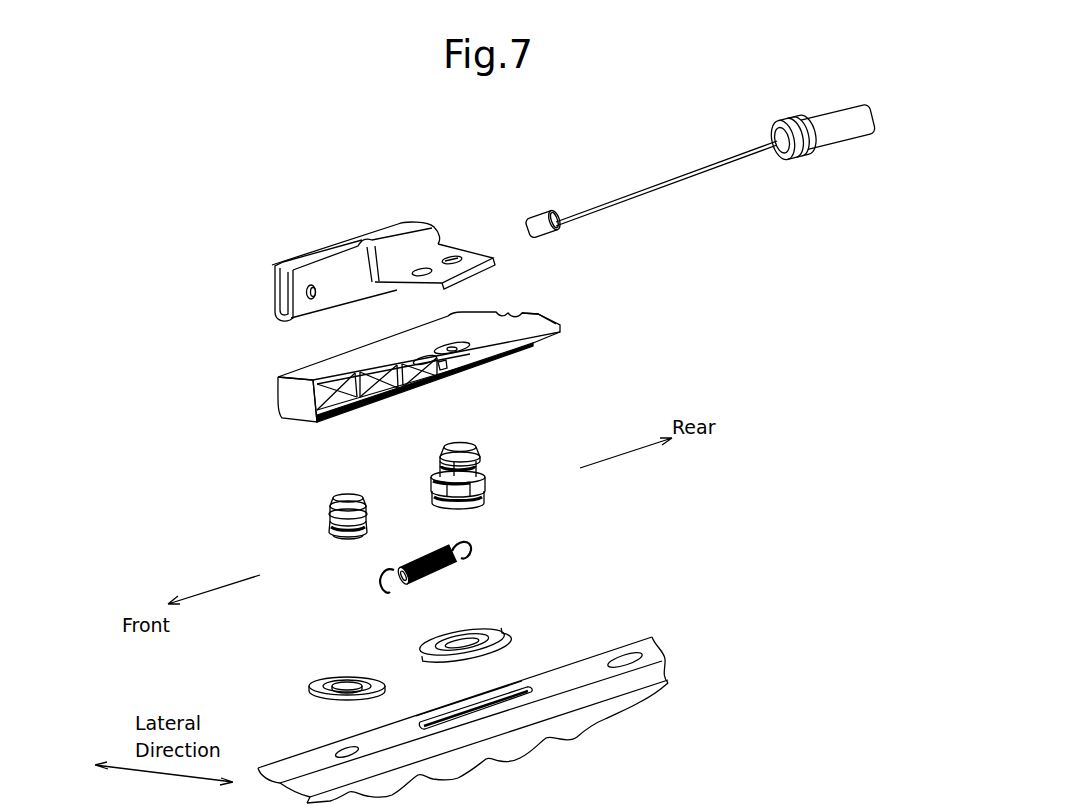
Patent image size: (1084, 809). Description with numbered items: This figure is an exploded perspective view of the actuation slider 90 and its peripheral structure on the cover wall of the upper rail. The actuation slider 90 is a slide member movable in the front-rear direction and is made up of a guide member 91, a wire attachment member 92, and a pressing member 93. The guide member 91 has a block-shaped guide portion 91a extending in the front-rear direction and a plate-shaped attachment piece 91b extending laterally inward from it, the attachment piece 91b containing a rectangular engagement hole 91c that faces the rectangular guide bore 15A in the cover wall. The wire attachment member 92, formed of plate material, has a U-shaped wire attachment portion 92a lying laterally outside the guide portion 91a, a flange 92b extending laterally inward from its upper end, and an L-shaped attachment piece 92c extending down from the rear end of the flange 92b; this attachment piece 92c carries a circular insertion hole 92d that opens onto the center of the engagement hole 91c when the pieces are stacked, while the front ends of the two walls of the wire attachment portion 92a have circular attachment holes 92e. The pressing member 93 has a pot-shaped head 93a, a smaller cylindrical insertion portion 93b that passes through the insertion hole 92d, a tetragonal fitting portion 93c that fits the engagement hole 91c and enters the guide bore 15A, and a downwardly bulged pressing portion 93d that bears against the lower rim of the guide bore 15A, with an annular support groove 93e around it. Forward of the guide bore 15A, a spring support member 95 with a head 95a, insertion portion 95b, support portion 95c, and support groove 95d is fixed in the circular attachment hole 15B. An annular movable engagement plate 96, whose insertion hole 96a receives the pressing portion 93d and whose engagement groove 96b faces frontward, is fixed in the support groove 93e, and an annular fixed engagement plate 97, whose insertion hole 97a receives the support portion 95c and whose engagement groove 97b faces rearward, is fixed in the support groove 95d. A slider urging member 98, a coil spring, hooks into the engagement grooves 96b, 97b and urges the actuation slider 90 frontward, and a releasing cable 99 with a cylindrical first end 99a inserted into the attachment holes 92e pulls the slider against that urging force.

The actuation slider 90 is at (636, 154).
The guide member 91 is at (490, 305).
The guide portion 91a is at (283, 400).
The attachment piece 91b is at (530, 328).
The engagement hole 91c is at (455, 344).
The wire attachment member 92 is at (407, 225).
The wire attachment portion 92a is at (310, 303).
The flange 92b is at (343, 265).
The attachment piece 92c is at (393, 286).
The insertion hole 92d is at (453, 261).
The attachment hole 92e is at (295, 291).
The pressing member 93 is at (463, 474).
The head 93a is at (447, 447).
The insertion portion 93b is at (445, 458).
The fitting portion 93c is at (438, 476).
The pressing portion 93d is at (440, 508).
The support groove 93e is at (484, 488).
The spring support member 95 is at (348, 513).
The head 95a is at (335, 494).
The insertion portion 95b is at (368, 505).
The support portion 95c is at (350, 540).
The support groove 95d is at (328, 525).
The movable engagement plate 96 is at (442, 632).
The insertion hole 96a is at (470, 630).
The engagement groove 96b is at (450, 650).
The fixed engagement plate 97 is at (326, 680).
The insertion hole 97a is at (340, 690).
The engagement groove 97b is at (375, 660).
The slider urging member 98 is at (452, 568).
The releasing cable 99 is at (845, 140).
The first end 99a is at (545, 214).
The guide bore 15A is at (513, 694).
The attachment hole 15B is at (345, 750).